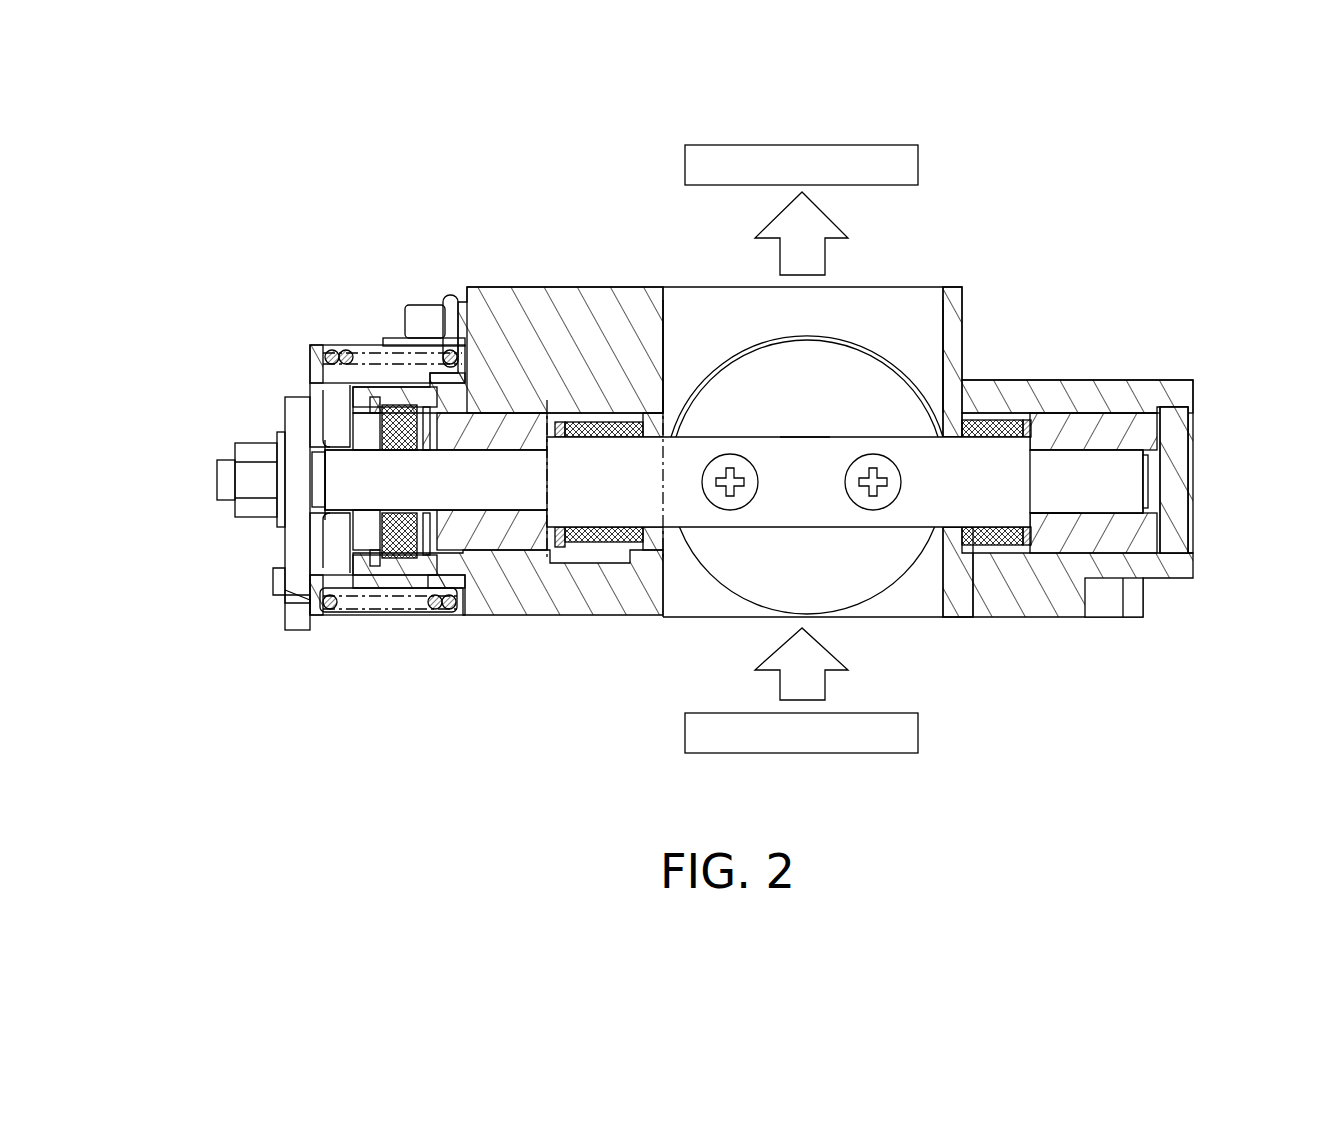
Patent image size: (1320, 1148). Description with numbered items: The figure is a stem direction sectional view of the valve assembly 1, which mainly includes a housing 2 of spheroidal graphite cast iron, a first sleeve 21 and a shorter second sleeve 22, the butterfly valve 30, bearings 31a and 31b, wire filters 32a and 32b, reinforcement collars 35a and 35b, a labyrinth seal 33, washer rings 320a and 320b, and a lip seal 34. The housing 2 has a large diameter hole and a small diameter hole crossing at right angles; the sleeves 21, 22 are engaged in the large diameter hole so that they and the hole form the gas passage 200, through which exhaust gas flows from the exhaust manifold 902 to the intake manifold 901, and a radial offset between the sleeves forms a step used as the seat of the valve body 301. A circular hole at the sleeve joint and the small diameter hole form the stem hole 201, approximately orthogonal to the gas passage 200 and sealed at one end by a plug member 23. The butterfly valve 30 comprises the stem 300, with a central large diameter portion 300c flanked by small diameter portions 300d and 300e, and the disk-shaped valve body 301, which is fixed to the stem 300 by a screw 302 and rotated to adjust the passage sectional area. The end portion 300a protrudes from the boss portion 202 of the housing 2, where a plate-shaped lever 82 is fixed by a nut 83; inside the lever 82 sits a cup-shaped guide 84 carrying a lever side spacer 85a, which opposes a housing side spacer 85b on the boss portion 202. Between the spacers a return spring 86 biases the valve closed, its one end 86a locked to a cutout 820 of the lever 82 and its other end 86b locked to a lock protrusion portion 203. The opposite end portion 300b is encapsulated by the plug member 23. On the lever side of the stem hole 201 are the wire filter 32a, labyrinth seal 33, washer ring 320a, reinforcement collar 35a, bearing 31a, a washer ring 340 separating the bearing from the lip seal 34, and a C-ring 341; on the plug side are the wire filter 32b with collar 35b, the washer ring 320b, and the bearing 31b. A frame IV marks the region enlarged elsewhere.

The valve assembly 1 is at (1172, 183).
The housing 2 is at (1185, 570).
The first sleeve 21 is at (957, 617).
The second sleeve 22 is at (952, 400).
The plug member 23 is at (1177, 477).
The butterfly valve 30 is at (730, 433).
The bearing 31a is at (497, 425).
The bearing 31b is at (1115, 400).
The wire filter 32a is at (598, 425).
The wire filter 32b is at (1013, 552).
The labyrinth seal 33 is at (560, 425).
The lip seal 34 is at (500, 594).
The reinforcement collar 35a is at (568, 546).
The reinforcement collar 35b is at (990, 552).
The lever 82 is at (297, 618).
The nut 83 is at (253, 465).
The guide 84 is at (312, 395).
The lever side spacer 85a is at (318, 357).
The housing side spacer 85b is at (451, 350).
The return spring 86 is at (388, 600).
The one end of return spring 86a is at (274, 580).
The other end of return spring 86b is at (450, 300).
The gas passage 200 is at (773, 326).
The stem hole 201 is at (690, 420).
The boss portion 202 is at (395, 392).
The lock protrusion portion 203 is at (418, 318).
The stem 300 is at (730, 433).
The end portion 300a is at (333, 470).
The end portion 300b is at (1103, 495).
The large diameter portion 300c is at (807, 453).
The small diameter portion 300d is at (398, 480).
The small diameter portion 300e is at (1053, 500).
The valve body 301 is at (910, 350).
The screw 302 is at (873, 490).
The washer ring 320a is at (523, 430).
The washer ring 320b is at (1090, 430).
The washer ring 340 is at (562, 594).
The C-ring 341 is at (374, 553).
The cutout 820 is at (273, 595).
The intake manifold 901 is at (918, 165).
The exhaust manifold 902 is at (685, 733).
The frame IV is at (665, 520).